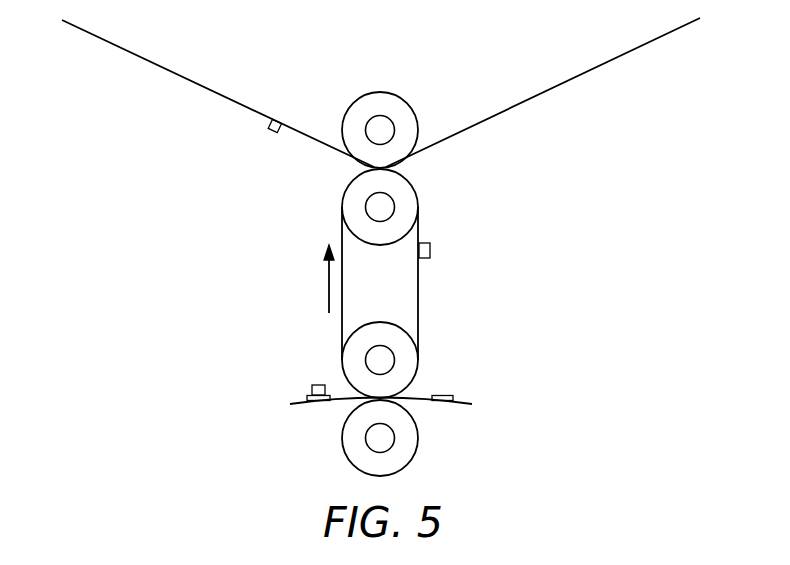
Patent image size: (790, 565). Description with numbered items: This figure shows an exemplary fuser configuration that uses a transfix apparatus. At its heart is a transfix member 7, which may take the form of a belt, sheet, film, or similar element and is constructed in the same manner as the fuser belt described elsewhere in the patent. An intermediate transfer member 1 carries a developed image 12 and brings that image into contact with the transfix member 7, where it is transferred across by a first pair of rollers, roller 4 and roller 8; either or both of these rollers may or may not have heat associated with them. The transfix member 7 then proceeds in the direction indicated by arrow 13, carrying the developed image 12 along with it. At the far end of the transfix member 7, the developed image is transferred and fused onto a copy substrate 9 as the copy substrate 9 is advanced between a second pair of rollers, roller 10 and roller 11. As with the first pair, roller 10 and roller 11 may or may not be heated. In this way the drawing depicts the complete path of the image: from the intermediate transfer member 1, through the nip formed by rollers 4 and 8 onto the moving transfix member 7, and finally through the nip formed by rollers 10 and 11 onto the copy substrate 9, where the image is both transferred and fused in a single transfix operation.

The intermediate transfer member 1 is at (214, 92).
The roller 4 is at (397, 95).
The transfix member 7 is at (420, 305).
The roller 8 is at (408, 201).
The copy substrate 9 is at (440, 396).
The roller 10 is at (410, 350).
The roller 11 is at (417, 435).
The developed image 12 is at (272, 133).
The arrow 13 is at (329, 283).